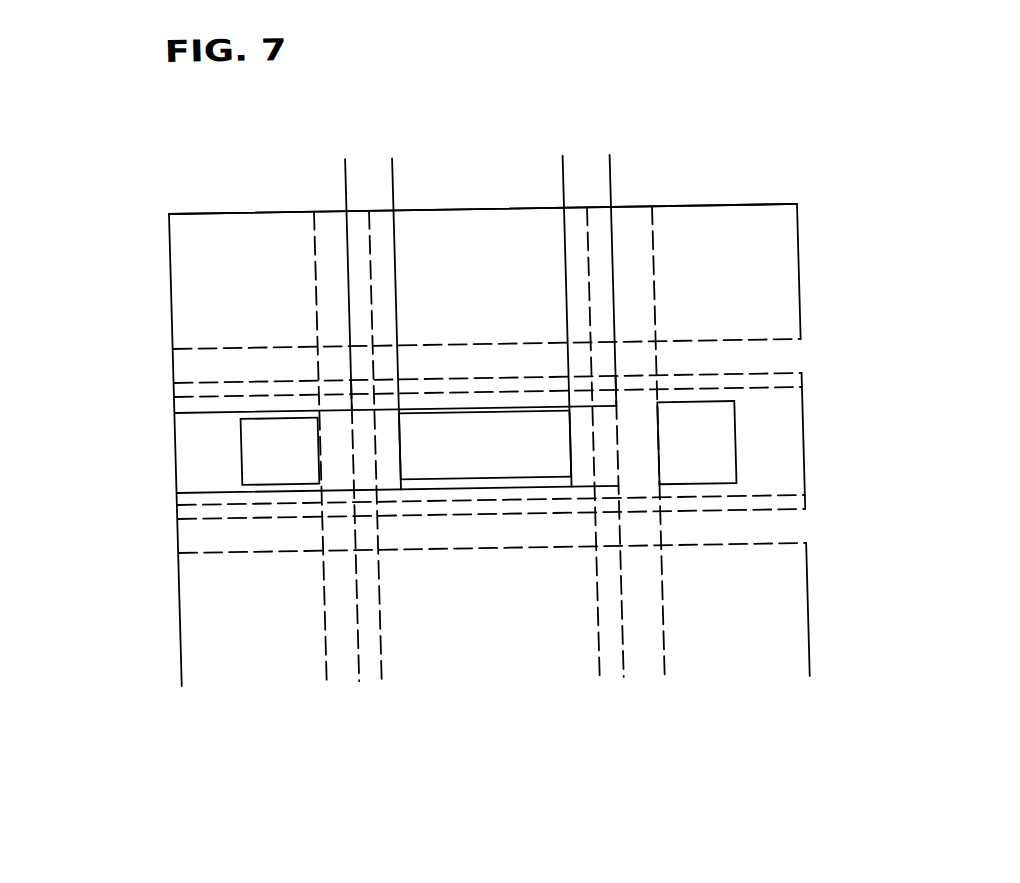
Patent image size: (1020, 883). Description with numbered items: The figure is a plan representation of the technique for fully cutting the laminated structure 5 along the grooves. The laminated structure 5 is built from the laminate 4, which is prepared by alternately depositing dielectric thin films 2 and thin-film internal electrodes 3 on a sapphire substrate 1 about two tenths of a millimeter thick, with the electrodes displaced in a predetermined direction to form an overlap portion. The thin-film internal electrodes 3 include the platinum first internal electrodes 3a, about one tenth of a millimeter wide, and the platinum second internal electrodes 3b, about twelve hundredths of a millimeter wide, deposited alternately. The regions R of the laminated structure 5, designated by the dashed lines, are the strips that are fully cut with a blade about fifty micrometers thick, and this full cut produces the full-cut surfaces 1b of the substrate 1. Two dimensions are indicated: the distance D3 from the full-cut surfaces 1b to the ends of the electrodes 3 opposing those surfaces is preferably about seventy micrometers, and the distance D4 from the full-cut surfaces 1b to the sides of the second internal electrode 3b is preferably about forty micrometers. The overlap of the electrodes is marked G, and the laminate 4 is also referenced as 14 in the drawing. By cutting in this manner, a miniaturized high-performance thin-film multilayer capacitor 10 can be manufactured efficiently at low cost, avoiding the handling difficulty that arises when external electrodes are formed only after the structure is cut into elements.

The sapphire substrate 1 is at (796, 658).
The full-cut surface 1b is at (344, 440).
The dielectric thin film 2 is at (768, 612).
The thin-film internal electrode 3 is at (544, 318).
The first internal electrode 3a is at (382, 414).
The second internal electrode 3b is at (597, 409).
The laminate 4 is at (489, 436).
The wiring layer 14 is at (482, 520).
The laminated structure 5 is at (773, 195).
The thin-film multilayer capacitor 10 is at (478, 368).
The gap G is at (354, 455).
The region R is at (808, 350).
The distance D3 is at (421, 166).
The distance D4 is at (172, 519).